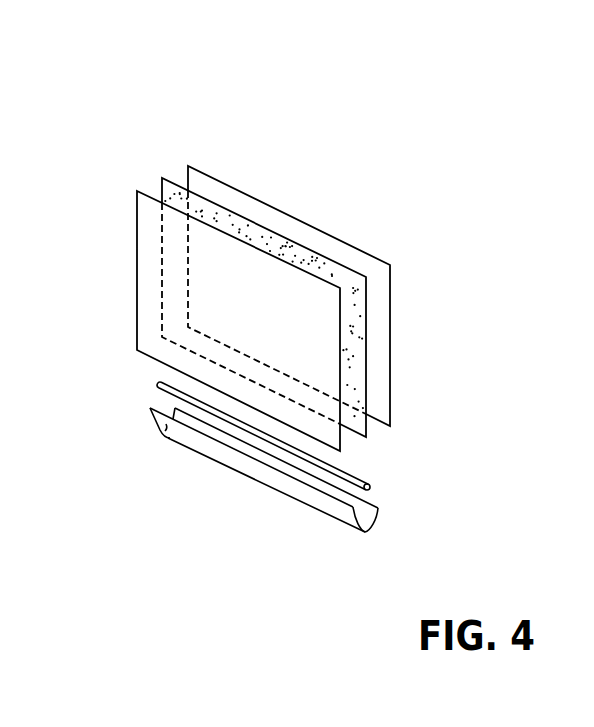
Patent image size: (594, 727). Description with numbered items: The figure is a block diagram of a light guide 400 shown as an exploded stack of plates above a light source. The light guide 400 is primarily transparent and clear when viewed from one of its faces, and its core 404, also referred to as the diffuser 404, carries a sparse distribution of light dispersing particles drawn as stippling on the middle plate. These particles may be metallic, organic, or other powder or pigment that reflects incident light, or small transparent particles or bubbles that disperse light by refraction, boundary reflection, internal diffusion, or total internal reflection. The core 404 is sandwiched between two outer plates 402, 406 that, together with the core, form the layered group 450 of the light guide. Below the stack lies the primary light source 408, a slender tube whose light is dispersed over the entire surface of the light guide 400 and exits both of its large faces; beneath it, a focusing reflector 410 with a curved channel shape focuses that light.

The light guide 400 is at (340, 42).
The optical plate stack 450 is at (142, 101).
The reflective sheet 402 is at (183, 160).
The core 404 is at (150, 172).
The diffuser plate 406 is at (127, 190).
The primary light source 408 is at (149, 375).
The focusing reflector 410 is at (152, 420).